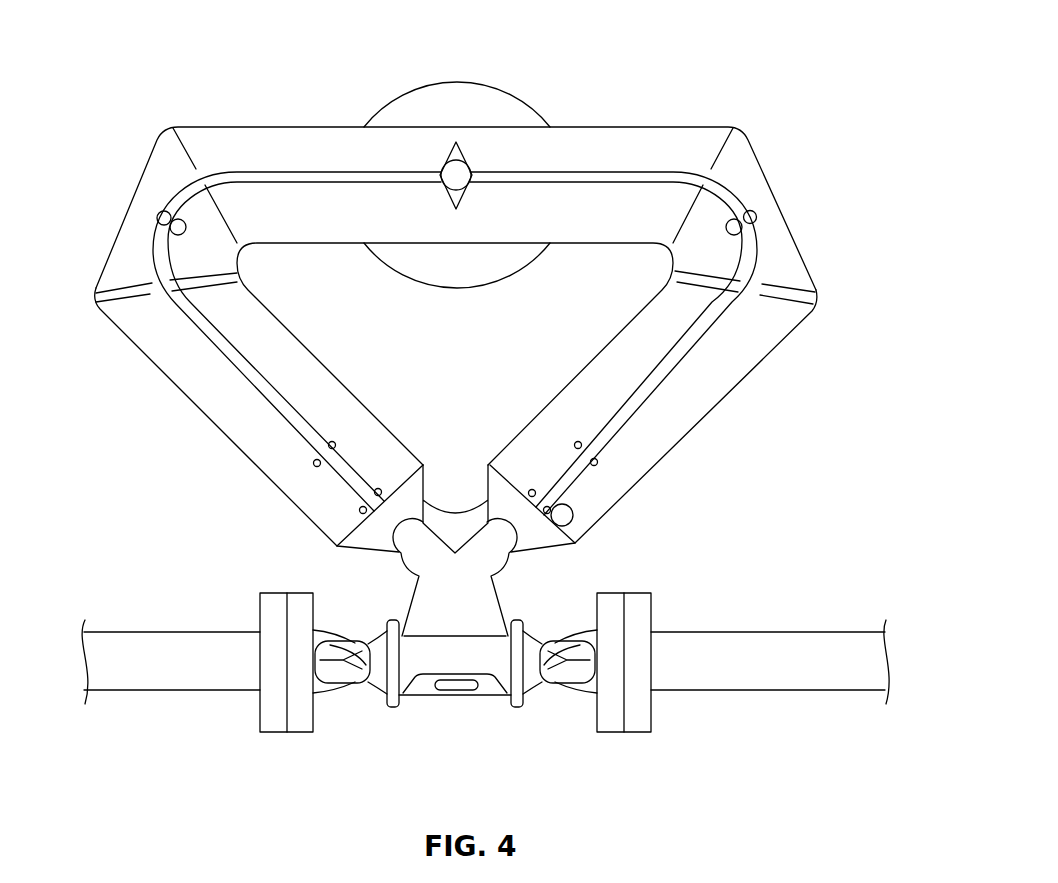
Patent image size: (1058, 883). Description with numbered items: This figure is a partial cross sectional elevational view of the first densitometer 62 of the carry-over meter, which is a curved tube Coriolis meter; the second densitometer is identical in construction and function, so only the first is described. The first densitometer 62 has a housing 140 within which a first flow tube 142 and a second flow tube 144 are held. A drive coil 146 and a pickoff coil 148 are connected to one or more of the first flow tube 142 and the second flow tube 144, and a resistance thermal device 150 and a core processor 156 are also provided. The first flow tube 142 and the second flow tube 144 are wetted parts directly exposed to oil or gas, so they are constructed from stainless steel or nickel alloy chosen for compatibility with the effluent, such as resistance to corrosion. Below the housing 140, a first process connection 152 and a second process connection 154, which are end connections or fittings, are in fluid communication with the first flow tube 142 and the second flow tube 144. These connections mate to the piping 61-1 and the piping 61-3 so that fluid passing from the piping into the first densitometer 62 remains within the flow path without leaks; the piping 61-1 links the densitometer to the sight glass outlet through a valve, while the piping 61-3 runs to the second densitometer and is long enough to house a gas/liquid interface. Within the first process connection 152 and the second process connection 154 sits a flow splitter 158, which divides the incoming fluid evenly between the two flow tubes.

The first densitometer 62 is at (243, 72).
The housing 140 is at (810, 319).
The first flow tube 142 is at (606, 445).
The second flow tube 144 is at (660, 385).
The drive coil 146 is at (457, 168).
The pickoff coil 148 is at (166, 222).
The resistance thermal device 150 is at (566, 517).
The first process connection 152 is at (627, 678).
The second process connection 154 is at (284, 678).
The core processor 156 is at (437, 90).
The flow splitter 158 is at (333, 684).
The piping 61-1 is at (742, 632).
The piping 61-3 is at (177, 632).